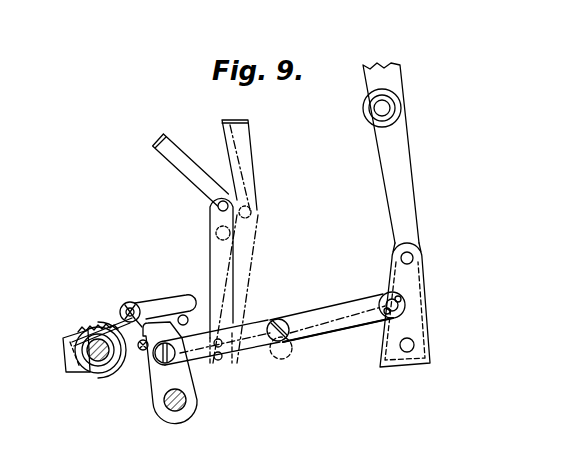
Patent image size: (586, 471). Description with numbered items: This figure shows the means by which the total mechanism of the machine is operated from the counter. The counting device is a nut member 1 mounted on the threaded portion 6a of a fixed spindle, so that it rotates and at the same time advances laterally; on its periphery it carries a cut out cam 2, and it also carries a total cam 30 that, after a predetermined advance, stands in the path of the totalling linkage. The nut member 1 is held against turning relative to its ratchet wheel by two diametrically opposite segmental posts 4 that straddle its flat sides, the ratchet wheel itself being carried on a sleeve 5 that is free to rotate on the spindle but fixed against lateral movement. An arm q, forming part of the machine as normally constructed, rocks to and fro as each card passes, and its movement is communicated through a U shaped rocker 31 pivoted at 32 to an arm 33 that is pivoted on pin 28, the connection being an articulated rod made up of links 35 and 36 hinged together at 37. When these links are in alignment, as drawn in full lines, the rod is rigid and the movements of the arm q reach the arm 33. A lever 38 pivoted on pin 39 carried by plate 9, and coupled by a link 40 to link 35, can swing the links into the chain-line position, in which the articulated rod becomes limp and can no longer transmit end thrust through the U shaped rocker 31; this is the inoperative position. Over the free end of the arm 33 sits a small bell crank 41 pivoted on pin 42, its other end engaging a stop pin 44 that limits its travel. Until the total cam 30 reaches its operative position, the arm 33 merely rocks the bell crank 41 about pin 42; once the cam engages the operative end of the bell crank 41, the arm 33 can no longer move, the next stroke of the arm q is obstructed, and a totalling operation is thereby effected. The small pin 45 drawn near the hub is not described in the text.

The nut member 1 is at (122, 362).
The cut out cam 2 is at (66, 355).
The posts 4 is at (82, 327).
The sleeve 5 is at (90, 325).
The threaded portion 6a is at (90, 373).
The plate 9 is at (398, 173).
The pin 28 is at (170, 418).
The total cam 30 is at (138, 357).
The U shaped rocker 31 is at (415, 286).
The pivot 32 is at (415, 344).
The arm 33 is at (178, 378).
The link 35 is at (252, 322).
The link 36 is at (350, 284).
The hinge 37 is at (292, 352).
The lever 38 is at (180, 152).
The pin 39 is at (218, 232).
The link 40 is at (222, 278).
The bell crank 41 is at (163, 300).
The pin 42 is at (132, 302).
The stop pin 44 is at (186, 316).
The pin 45 is at (150, 352).